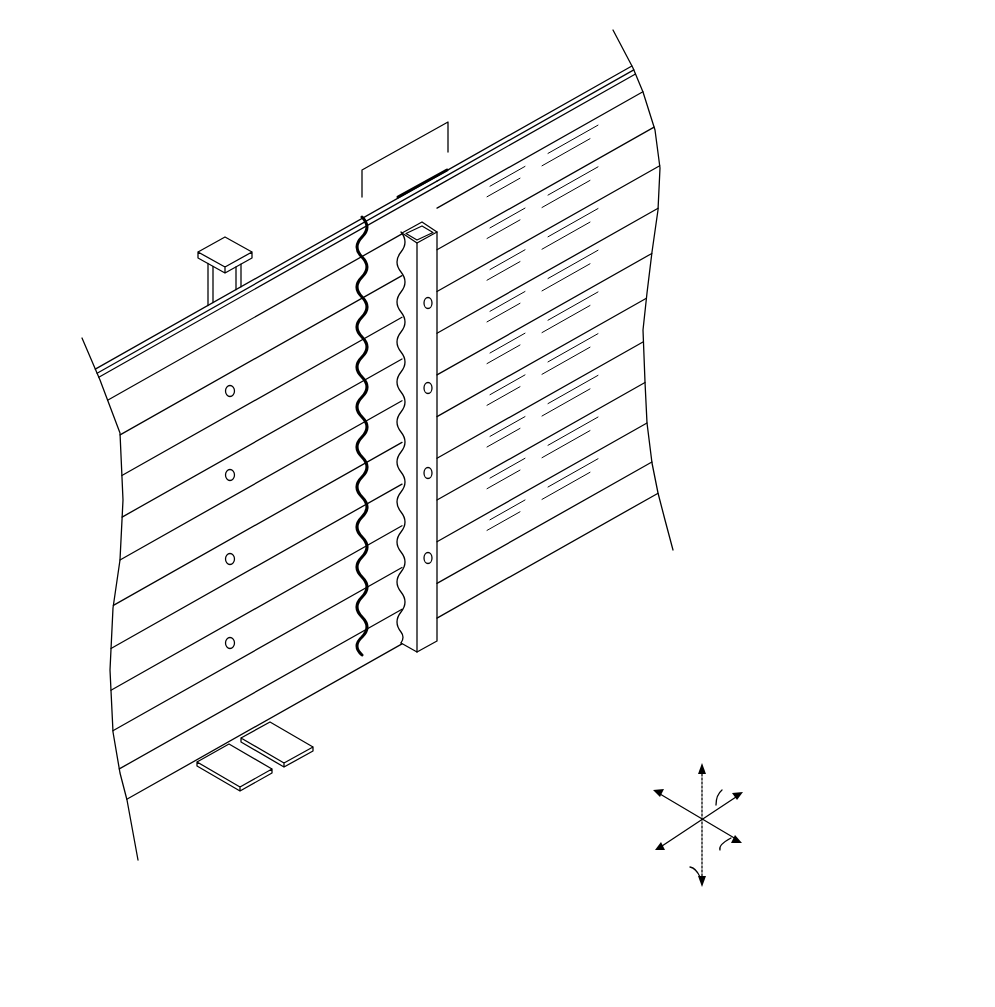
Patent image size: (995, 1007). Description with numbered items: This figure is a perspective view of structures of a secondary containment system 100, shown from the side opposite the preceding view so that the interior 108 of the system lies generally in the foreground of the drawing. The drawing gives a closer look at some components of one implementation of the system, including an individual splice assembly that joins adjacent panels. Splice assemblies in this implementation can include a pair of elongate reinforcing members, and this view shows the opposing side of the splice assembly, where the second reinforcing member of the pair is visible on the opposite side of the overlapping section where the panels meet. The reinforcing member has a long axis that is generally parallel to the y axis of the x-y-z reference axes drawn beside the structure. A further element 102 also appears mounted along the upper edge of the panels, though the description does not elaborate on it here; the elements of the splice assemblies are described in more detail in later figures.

The secondary containment system 100 is at (117, 57).
The hanger bracket 102 is at (188, 236).
The interior 108 is at (649, 614).